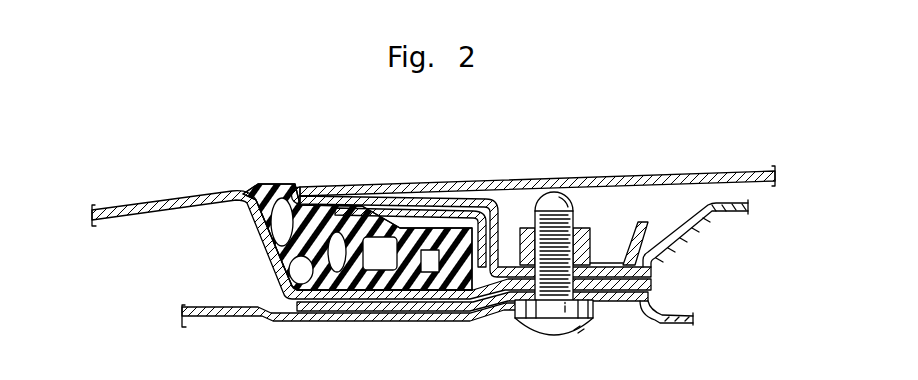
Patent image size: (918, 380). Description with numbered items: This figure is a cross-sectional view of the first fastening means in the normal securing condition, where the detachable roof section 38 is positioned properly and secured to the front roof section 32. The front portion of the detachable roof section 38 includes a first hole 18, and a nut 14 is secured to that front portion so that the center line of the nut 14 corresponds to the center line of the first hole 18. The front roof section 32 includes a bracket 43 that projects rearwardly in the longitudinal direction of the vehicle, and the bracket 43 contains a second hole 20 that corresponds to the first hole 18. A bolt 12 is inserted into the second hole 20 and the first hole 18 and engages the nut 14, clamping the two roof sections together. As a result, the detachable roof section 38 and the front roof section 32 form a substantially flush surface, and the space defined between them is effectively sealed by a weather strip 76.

The bolt 12 is at (582, 324).
The nut 14 is at (583, 230).
The first hole 18 is at (572, 275).
The second hole 20 is at (552, 300).
The front roof section 32 is at (216, 178).
The detachable roof section 38 is at (592, 167).
The bracket 43 is at (407, 302).
The weather strip 76 is at (267, 184).